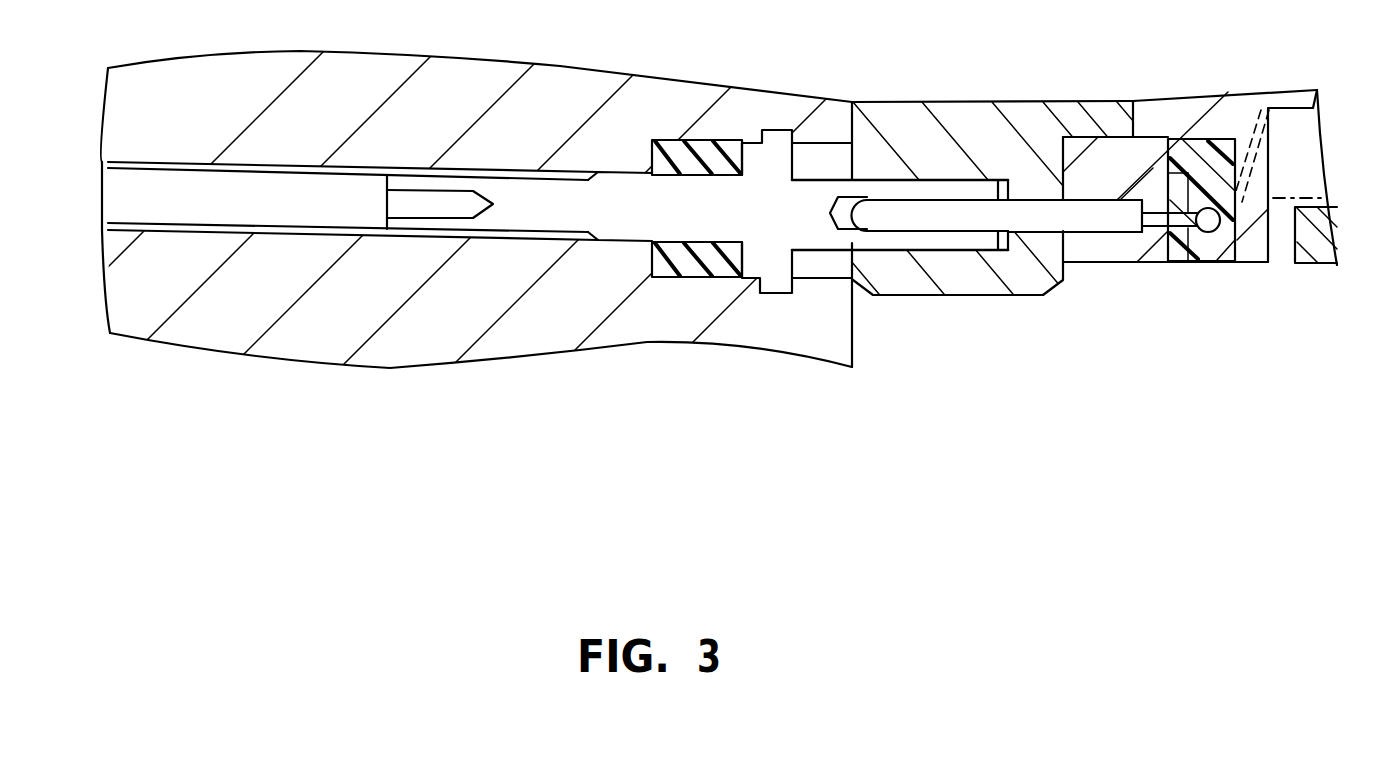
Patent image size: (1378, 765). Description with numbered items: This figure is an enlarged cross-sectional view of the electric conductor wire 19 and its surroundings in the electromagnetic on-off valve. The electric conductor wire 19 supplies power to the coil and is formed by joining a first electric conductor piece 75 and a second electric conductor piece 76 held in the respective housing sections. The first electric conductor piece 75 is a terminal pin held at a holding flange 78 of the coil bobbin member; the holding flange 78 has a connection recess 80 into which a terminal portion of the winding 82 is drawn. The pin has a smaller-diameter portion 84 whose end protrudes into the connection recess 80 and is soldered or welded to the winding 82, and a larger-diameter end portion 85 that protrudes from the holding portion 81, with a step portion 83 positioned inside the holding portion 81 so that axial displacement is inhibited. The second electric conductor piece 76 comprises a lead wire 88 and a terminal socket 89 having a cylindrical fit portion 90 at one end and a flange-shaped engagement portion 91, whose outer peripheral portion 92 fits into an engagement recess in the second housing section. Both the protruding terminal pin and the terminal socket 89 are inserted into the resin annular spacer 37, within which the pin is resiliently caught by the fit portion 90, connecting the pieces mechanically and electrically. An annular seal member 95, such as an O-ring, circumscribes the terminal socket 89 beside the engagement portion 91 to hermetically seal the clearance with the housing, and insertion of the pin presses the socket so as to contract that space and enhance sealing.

The electric conductor wire 19 is at (518, 239).
The annular spacer 37 is at (1012, 126).
The first electric conductor piece 75 is at (1029, 238).
The second electric conductor piece 76 is at (282, 231).
The holding flange 78 is at (1160, 137).
The connection recess 80 is at (1210, 138).
The holding portion 81 is at (1113, 247).
The winding 82 is at (1243, 206).
The step portion 83 is at (1216, 236).
The portion of the first electric conductor piece 84 is at (1182, 258).
The end portion of the first electric conductor piece 85 is at (935, 218).
The lead wire 88 is at (175, 205).
The terminal socket 89 is at (618, 218).
The fit portion 90 is at (902, 186).
The engagement portion 91 is at (853, 343).
The outer peripheral portion 92 is at (775, 285).
The annular seal member 95 is at (708, 150).